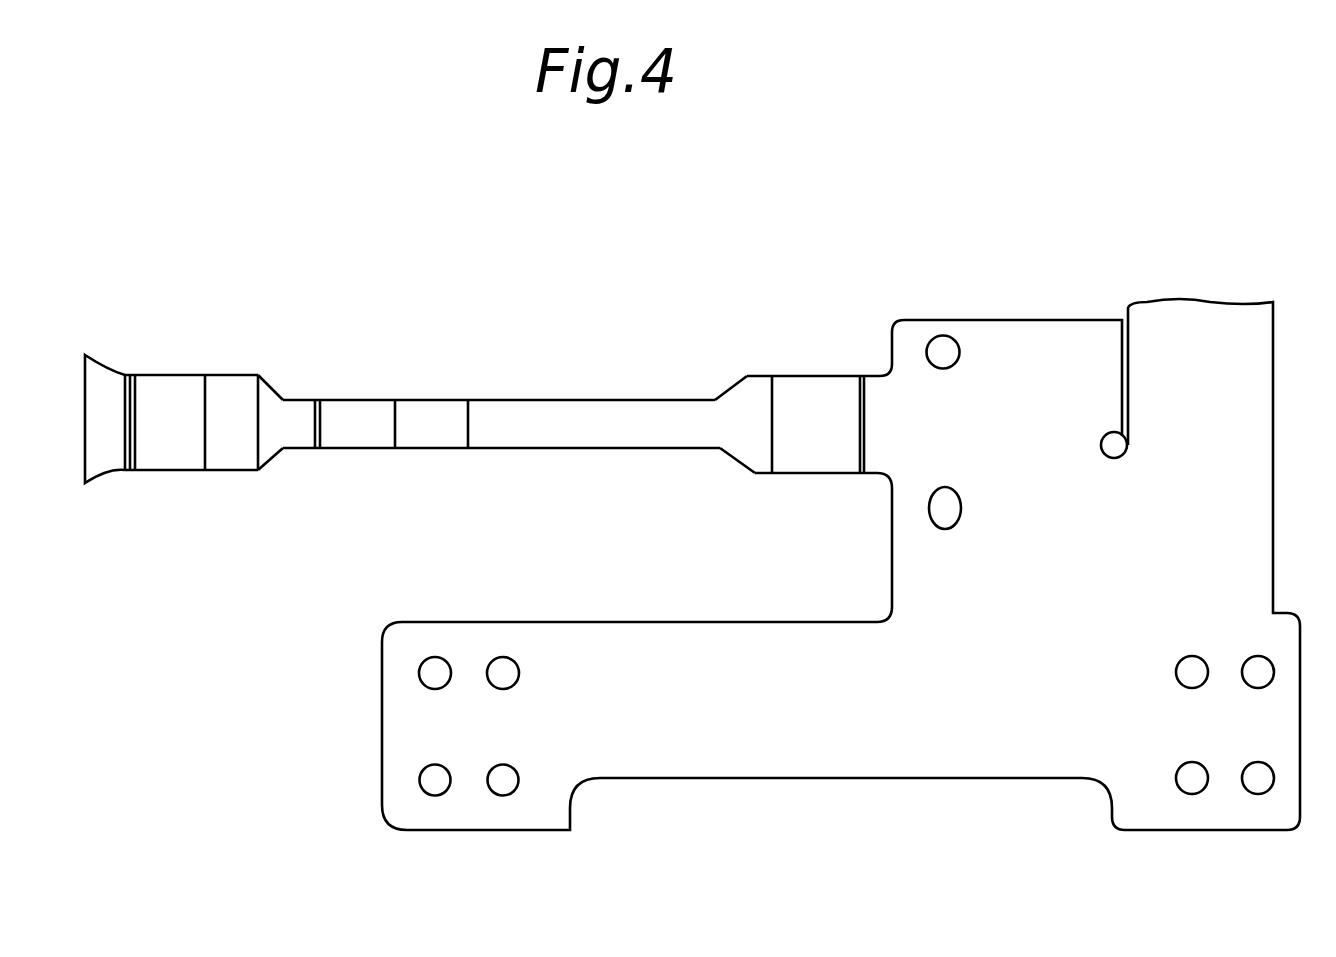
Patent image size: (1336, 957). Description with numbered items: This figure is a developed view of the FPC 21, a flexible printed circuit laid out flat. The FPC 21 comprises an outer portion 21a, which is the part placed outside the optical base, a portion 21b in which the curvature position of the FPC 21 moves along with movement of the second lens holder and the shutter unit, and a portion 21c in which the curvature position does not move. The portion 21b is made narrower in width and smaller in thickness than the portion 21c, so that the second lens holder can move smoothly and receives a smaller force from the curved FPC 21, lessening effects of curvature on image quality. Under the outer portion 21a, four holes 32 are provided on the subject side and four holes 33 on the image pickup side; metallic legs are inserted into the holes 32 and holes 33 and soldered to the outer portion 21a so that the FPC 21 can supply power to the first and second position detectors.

The FPC 21 is at (482, 410).
The outer portion 21a is at (1028, 332).
The portion in which the curvature position moves 21b is at (713, 455).
The portion in which the curvature position does not move 21c is at (260, 481).
The holes 32 is at (431, 665).
The holes 33 is at (1255, 770).